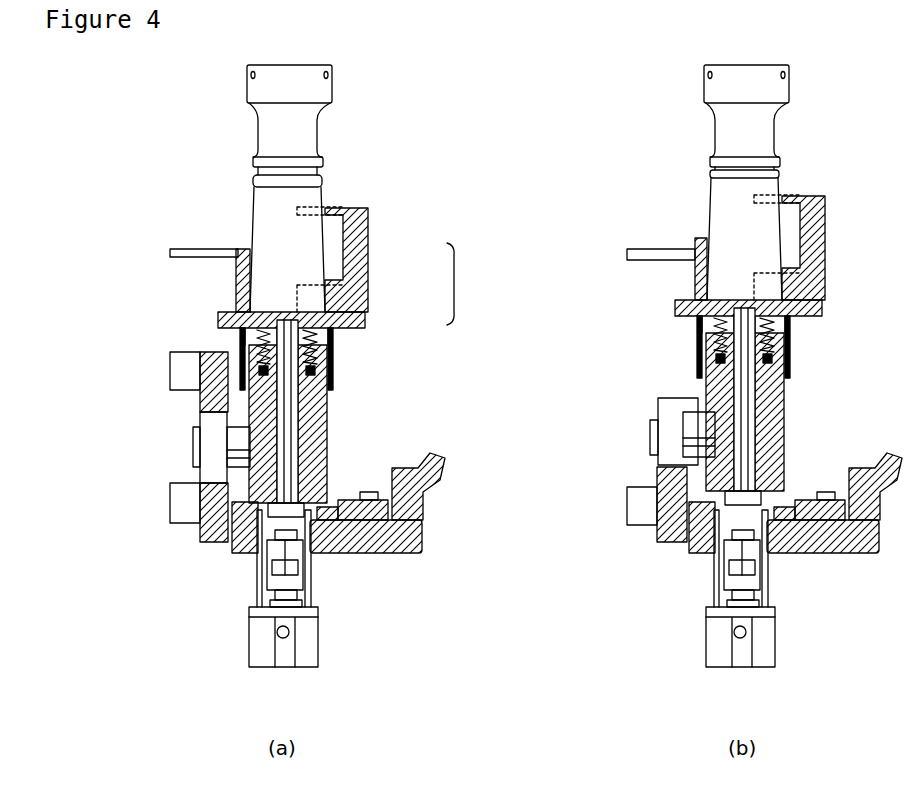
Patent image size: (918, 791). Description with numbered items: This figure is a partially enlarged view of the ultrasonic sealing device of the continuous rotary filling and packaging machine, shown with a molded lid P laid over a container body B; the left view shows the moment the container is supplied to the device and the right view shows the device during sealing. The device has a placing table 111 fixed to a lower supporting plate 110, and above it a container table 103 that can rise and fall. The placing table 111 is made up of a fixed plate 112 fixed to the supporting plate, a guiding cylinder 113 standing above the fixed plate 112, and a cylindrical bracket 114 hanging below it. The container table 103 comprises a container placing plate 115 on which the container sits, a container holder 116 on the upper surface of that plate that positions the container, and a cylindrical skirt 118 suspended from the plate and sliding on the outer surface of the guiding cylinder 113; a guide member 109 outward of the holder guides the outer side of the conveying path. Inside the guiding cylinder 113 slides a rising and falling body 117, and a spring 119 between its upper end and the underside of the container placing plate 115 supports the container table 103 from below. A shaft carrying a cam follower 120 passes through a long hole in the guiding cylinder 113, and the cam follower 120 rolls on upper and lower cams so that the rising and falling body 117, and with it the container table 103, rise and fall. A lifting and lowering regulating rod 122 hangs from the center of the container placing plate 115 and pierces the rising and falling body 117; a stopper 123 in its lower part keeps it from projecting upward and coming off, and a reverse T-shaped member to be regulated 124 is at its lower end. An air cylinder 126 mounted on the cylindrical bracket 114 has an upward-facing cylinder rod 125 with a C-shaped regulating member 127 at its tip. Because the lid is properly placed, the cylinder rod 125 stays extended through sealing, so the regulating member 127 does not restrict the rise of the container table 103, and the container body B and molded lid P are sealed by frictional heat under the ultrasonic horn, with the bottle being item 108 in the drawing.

The cap 108 is at (318, 140).
The molded lid P is at (257, 178).
The container body B is at (255, 217).
The guide member 109 is at (238, 292).
The container holder 116 is at (368, 273).
The container placing plate 115 is at (368, 313).
The container table 103 is at (482, 284).
The cylindrical skirt 118 is at (335, 370).
The spring 119 is at (260, 345).
The rising and falling body 117 is at (315, 417).
The lifting and lowering regulating rod 122 is at (313, 400).
The guiding cylinder 113 is at (333, 452).
The cam follower 120 is at (193, 448).
The fixed plate 112 is at (233, 507).
The lower supporting plate 110 is at (425, 528).
The placing table 111 is at (338, 481).
The stopper 123 is at (363, 552).
The cylindrical bracket 114 is at (257, 568).
The member to be regulated 124 is at (293, 568).
The cylinder rod 125 is at (272, 593).
The regulating member 127 is at (297, 587).
The air cylinder 126 is at (248, 643).